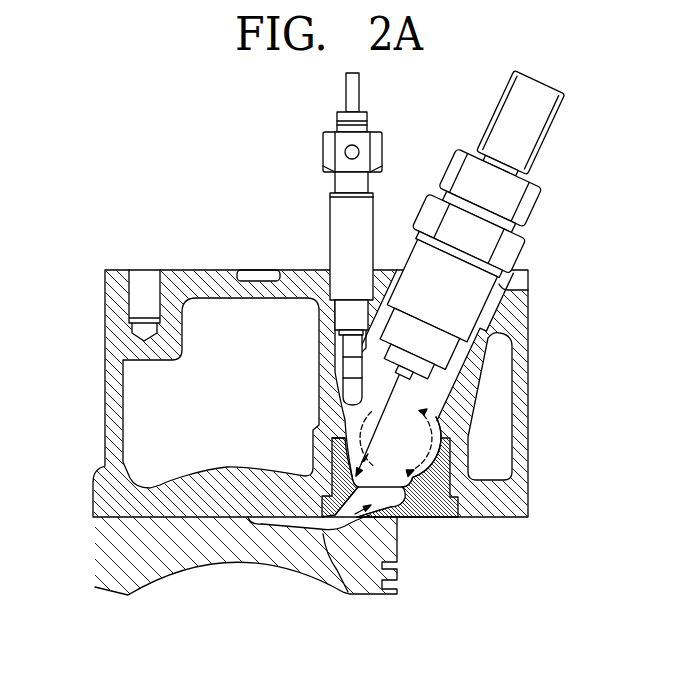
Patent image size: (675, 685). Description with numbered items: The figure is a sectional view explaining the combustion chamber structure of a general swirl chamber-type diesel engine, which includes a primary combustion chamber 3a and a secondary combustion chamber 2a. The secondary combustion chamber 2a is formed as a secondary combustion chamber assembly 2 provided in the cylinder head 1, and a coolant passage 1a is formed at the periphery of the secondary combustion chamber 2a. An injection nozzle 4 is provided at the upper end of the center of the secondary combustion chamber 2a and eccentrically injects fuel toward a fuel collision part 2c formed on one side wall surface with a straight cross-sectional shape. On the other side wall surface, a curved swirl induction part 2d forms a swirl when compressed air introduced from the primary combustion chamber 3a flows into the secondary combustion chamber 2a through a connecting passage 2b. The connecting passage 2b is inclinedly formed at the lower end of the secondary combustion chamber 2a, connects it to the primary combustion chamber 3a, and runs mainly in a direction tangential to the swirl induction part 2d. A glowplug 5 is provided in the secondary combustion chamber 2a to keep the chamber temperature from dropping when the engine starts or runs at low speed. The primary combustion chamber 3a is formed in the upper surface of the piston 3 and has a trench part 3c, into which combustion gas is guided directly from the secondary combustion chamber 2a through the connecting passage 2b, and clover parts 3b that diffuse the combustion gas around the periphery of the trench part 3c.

The cylinder head 1 is at (520, 314).
The coolant passage 1a is at (223, 315).
The secondary combustion chamber assembly 2 is at (458, 508).
The secondary combustion chamber 2a is at (447, 420).
The connecting passage 2b is at (403, 517).
The fuel collision part 2c is at (333, 423).
The swirl induction part 2d is at (412, 428).
The piston 3 is at (398, 575).
The primary combustion chamber 3a is at (313, 523).
The clover parts 3b is at (252, 522).
The trench part 3c is at (362, 592).
The injection nozzle 4 is at (528, 152).
The glowplug 5 is at (332, 200).